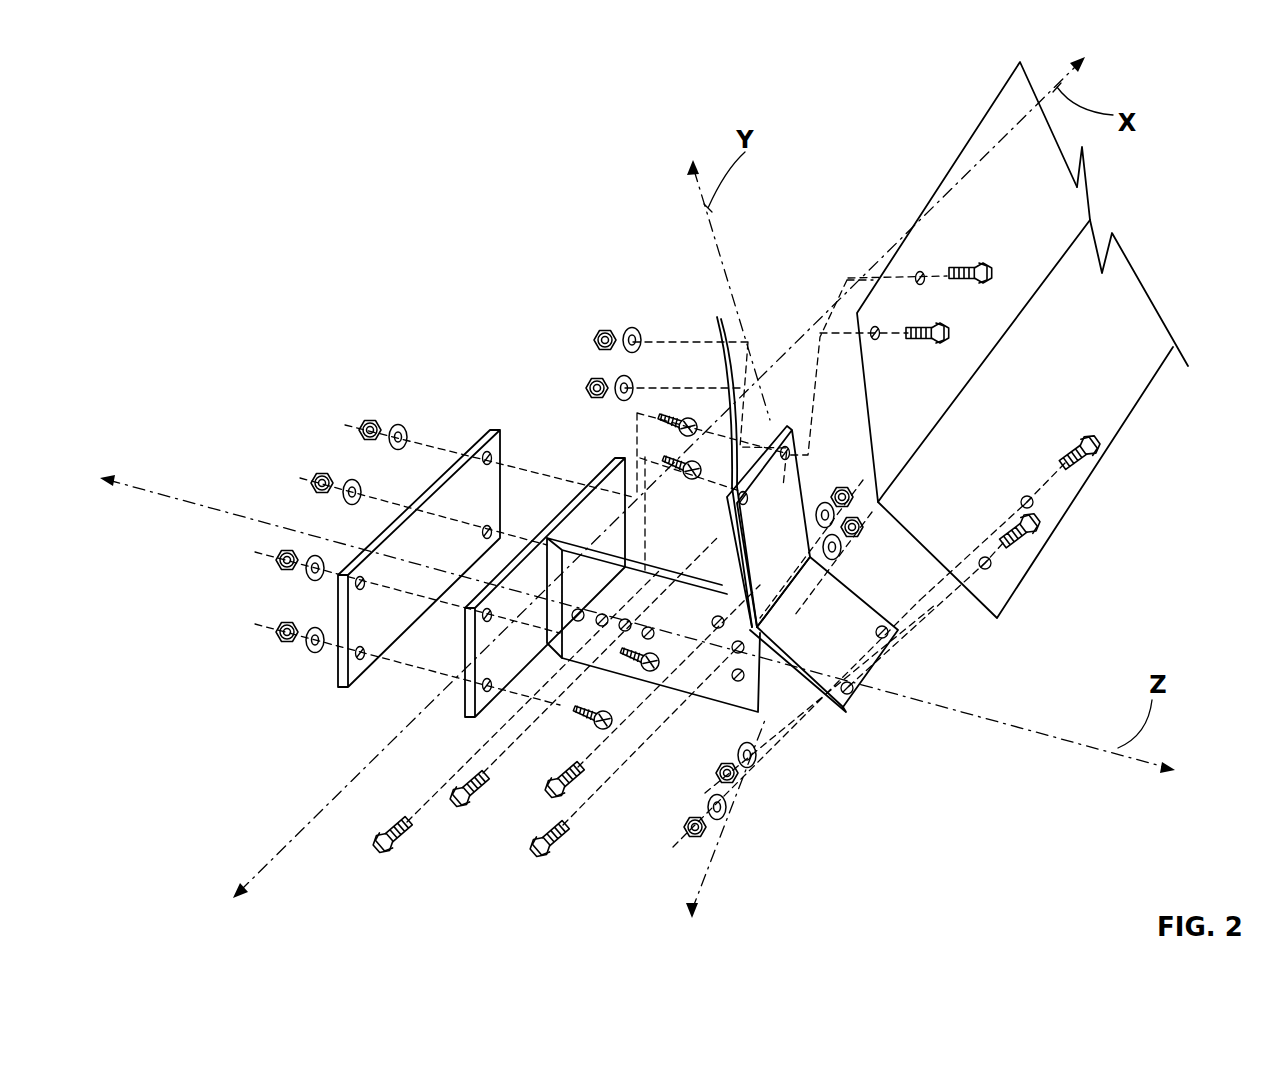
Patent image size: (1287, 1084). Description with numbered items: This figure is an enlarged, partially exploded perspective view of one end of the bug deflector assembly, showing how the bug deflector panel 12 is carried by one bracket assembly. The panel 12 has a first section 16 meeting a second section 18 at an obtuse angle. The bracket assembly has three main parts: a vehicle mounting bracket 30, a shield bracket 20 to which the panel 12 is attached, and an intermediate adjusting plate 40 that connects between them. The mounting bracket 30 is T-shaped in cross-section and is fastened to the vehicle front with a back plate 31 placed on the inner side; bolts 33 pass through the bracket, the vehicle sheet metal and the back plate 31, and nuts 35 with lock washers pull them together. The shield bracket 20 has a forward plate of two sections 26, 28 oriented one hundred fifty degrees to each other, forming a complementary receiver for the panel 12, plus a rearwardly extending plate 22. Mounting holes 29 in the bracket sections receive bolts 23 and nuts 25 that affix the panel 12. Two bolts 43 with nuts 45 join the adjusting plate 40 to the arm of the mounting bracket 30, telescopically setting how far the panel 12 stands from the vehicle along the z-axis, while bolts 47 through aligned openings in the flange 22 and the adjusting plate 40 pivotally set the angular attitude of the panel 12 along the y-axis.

The bug deflector panel 12 is at (1094, 402).
The first section 16 is at (1038, 214).
The section 18 is at (1112, 352).
The shield bracket 20 is at (773, 421).
The rearwardly extending plate 22 is at (780, 672).
The bolts 23 is at (917, 330).
The nuts 25 is at (587, 378).
The section 26 is at (754, 541).
The section 28 is at (808, 642).
The mounting holes 29 is at (892, 647).
The mounting bracket 30 is at (460, 650).
The back plate 31 is at (421, 531).
The bolts 33 is at (700, 460).
The nuts 35 is at (362, 425).
The adjusting plate 40 is at (582, 585).
The bolts 43 is at (467, 775).
The nuts 45 is at (723, 458).
The bolts 47 is at (568, 833).